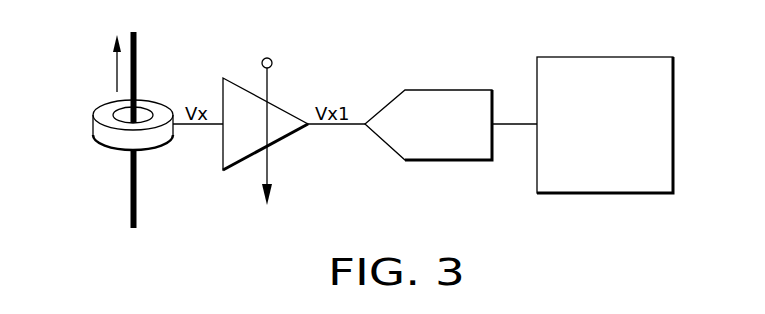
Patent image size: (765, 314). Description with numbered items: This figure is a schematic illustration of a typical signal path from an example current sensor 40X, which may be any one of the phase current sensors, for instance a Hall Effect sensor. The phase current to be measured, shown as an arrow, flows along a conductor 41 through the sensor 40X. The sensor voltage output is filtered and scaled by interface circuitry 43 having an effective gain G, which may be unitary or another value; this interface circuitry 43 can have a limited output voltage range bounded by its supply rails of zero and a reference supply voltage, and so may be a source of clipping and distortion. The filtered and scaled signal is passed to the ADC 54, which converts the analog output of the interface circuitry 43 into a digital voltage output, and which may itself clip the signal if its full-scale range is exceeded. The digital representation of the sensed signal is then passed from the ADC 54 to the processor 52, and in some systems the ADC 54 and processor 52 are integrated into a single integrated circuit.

The conductor carrying current Ix 41 is at (137, 68).
The current sensor 40X is at (93, 122).
The interface circuitry 43 is at (240, 206).
The ADC 54 is at (445, 88).
The processor 52 is at (605, 57).